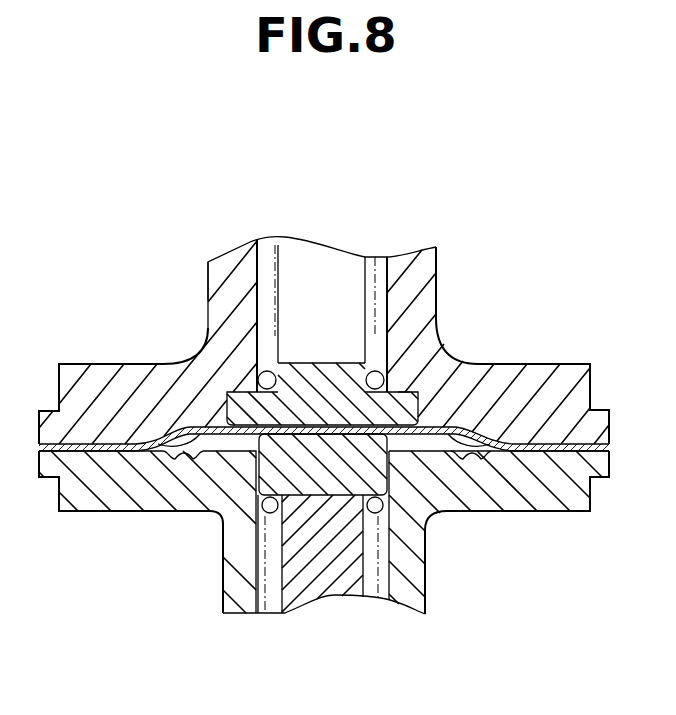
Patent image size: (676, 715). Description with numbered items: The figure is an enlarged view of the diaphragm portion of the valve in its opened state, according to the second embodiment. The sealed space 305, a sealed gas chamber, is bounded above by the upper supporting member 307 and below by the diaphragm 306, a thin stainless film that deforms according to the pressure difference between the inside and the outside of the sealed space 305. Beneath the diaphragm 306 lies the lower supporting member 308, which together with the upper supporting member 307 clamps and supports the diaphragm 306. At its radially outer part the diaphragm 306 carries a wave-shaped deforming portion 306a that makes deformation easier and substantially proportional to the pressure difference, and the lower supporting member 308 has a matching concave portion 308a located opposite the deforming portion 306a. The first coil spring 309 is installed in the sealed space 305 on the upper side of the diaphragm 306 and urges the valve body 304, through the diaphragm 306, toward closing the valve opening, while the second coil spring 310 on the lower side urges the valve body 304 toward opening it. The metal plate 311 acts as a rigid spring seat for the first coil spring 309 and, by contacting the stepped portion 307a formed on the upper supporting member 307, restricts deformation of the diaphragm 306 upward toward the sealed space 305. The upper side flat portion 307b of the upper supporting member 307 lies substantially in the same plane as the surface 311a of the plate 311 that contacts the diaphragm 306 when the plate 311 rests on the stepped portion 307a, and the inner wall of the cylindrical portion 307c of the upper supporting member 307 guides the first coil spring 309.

The valve body 304 is at (324, 548).
The sealed space 305 is at (298, 277).
The diaphragm 306 is at (432, 424).
The deforming portion 306a is at (162, 452).
The upper supporting member 307 is at (106, 403).
The stepped portion 307a is at (240, 387).
The upper side flat portion 307b is at (196, 392).
The cylindrical portion 307c is at (208, 283).
The lower supporting member 308 is at (103, 483).
The concave portion 308a is at (178, 458).
The first coil spring 309 is at (373, 282).
The second coil spring 310 is at (258, 520).
The metal plate 311 is at (322, 372).
The surface of the plate 311a is at (398, 392).